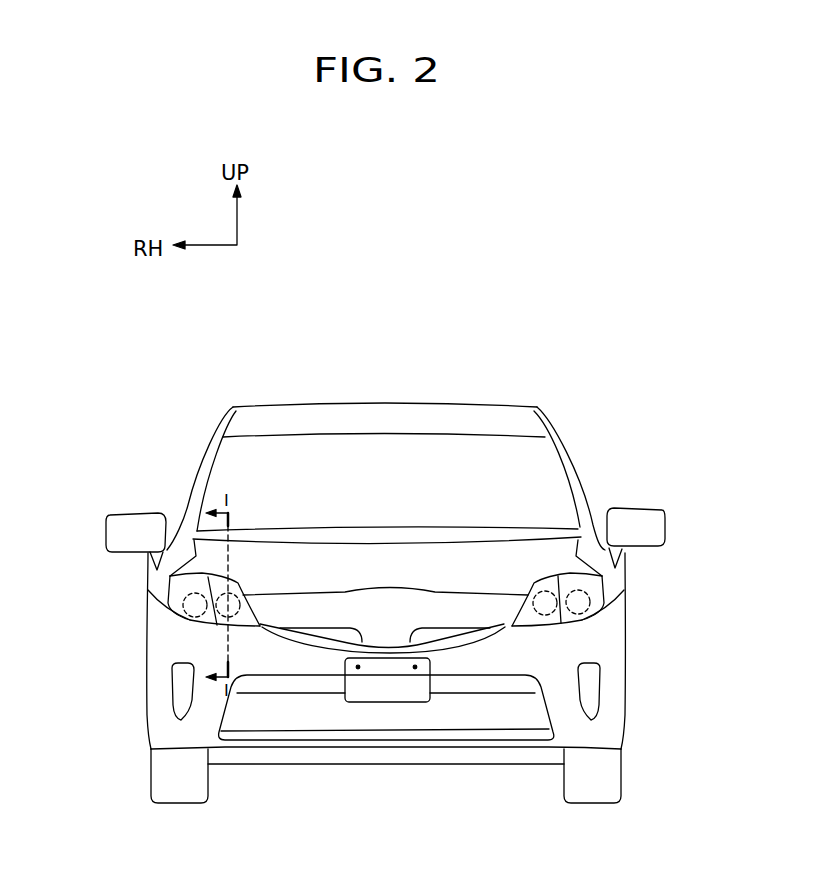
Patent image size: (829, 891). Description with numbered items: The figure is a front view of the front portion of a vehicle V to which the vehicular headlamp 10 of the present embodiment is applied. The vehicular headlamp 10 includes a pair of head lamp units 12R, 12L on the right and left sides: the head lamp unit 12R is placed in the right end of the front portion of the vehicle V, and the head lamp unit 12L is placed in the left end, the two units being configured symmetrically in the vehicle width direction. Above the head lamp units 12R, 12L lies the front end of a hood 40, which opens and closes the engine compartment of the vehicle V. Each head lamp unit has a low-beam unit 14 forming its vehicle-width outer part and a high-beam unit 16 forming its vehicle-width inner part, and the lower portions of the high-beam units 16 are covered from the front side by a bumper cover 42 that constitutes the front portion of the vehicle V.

The vehicle V is at (578, 396).
The vehicular headlamp 10 is at (383, 553).
The head lamp unit 12R is at (161, 592).
The head lamp unit 12L is at (613, 587).
The low-beam unit 14 is at (184, 625).
The high-beam unit 16 is at (224, 640).
The hood 40 is at (525, 553).
The bumper cover 42 is at (491, 660).